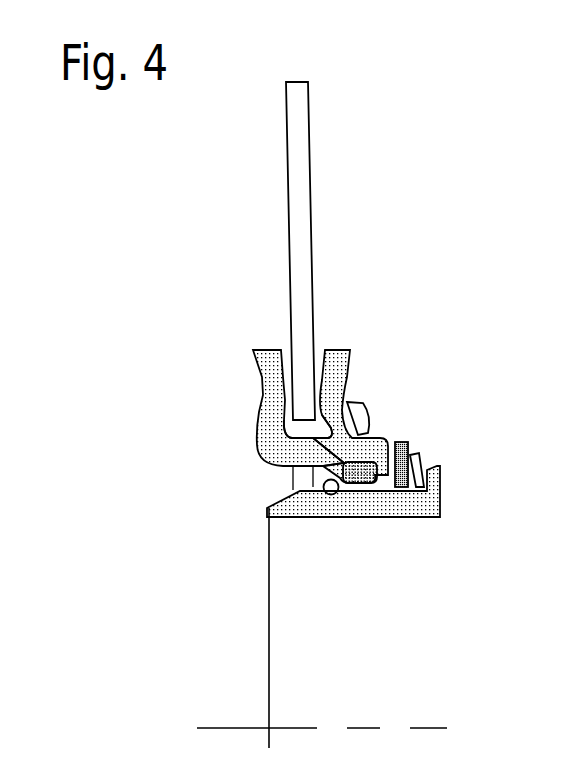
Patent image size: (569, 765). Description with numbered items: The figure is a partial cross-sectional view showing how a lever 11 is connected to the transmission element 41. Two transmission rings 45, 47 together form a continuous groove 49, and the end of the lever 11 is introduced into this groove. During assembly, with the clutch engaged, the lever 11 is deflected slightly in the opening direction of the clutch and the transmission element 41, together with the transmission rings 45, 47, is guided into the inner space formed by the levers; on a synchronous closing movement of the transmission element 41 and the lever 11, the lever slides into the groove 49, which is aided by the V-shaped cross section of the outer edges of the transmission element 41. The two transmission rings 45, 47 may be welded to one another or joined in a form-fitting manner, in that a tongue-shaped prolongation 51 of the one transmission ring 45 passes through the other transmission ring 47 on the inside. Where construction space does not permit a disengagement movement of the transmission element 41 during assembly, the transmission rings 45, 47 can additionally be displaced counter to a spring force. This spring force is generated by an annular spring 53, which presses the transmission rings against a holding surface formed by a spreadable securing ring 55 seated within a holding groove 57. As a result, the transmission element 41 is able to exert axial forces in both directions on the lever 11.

The lever 11 is at (300, 298).
The transmission element 41 is at (427, 508).
The transmission ring 45 is at (262, 377).
The transmission ring 47 is at (352, 370).
The groove 49 is at (287, 358).
The tongue-shaped prolongation 51 is at (370, 413).
The annular spring 53 is at (423, 468).
The securing ring 55 is at (323, 484).
The holding groove 57 is at (345, 487).